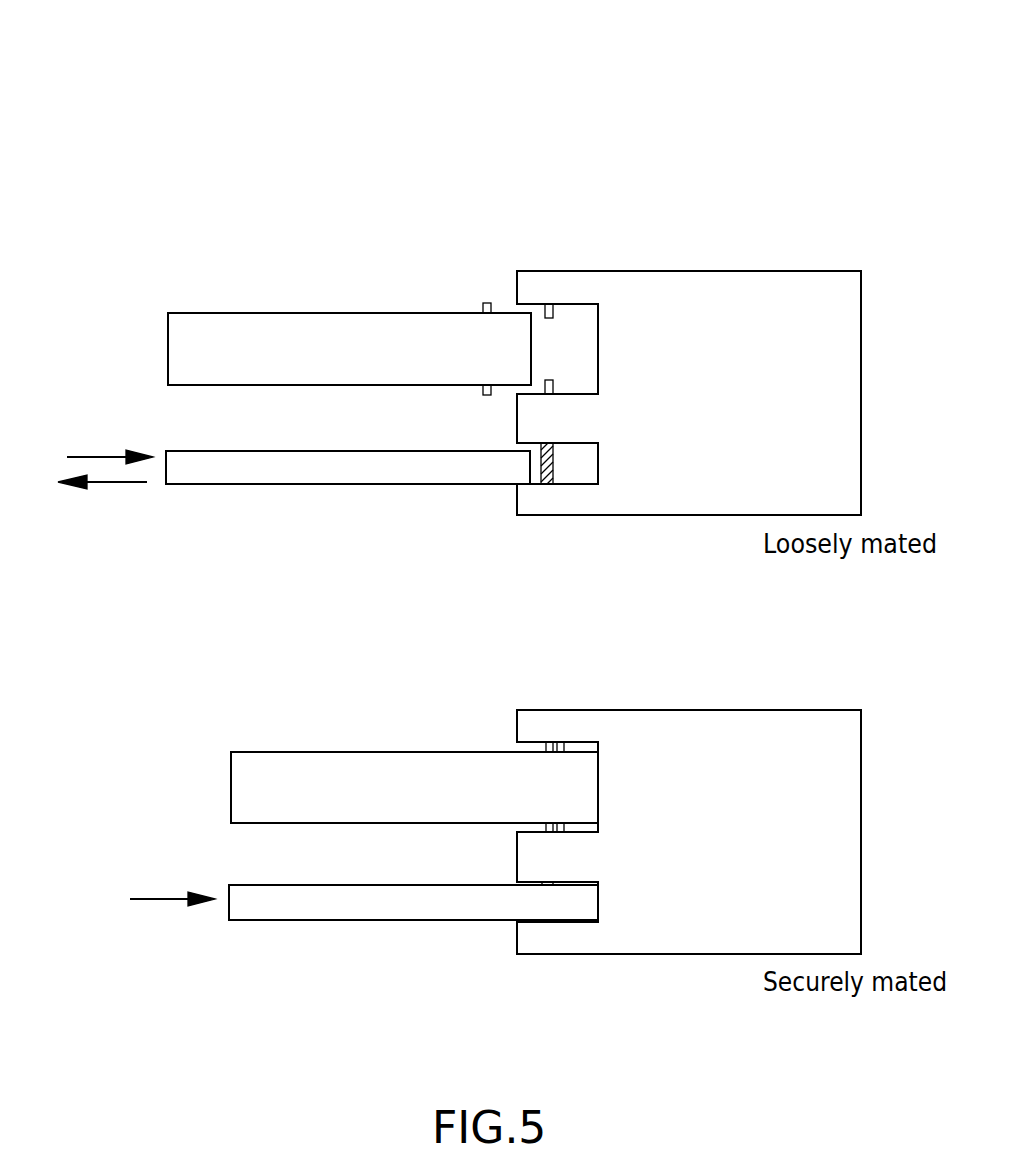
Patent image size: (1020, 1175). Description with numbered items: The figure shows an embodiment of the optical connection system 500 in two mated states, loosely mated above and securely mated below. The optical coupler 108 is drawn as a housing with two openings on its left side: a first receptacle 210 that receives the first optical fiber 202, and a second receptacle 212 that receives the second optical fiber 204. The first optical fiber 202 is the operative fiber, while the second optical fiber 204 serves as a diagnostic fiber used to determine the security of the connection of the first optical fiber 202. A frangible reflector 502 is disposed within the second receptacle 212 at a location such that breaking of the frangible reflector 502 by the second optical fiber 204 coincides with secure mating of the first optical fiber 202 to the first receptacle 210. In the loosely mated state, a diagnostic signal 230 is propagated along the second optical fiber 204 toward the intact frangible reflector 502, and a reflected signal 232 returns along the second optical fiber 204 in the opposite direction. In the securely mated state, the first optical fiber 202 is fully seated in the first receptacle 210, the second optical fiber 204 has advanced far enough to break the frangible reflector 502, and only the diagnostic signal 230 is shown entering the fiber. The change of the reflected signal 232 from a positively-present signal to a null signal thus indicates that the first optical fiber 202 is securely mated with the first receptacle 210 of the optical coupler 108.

The optical connection system 500 is at (797, 118).
The optical coupler 108 is at (722, 271).
The first optical fiber 202 is at (296, 312).
The second optical fiber 204 is at (342, 486).
The first receptacle 210 is at (600, 338).
The second receptacle 212 is at (595, 463).
The diagnostic signal 230 is at (103, 457).
The reflected signal 232 is at (118, 485).
The frangible reflector 502 is at (547, 485).